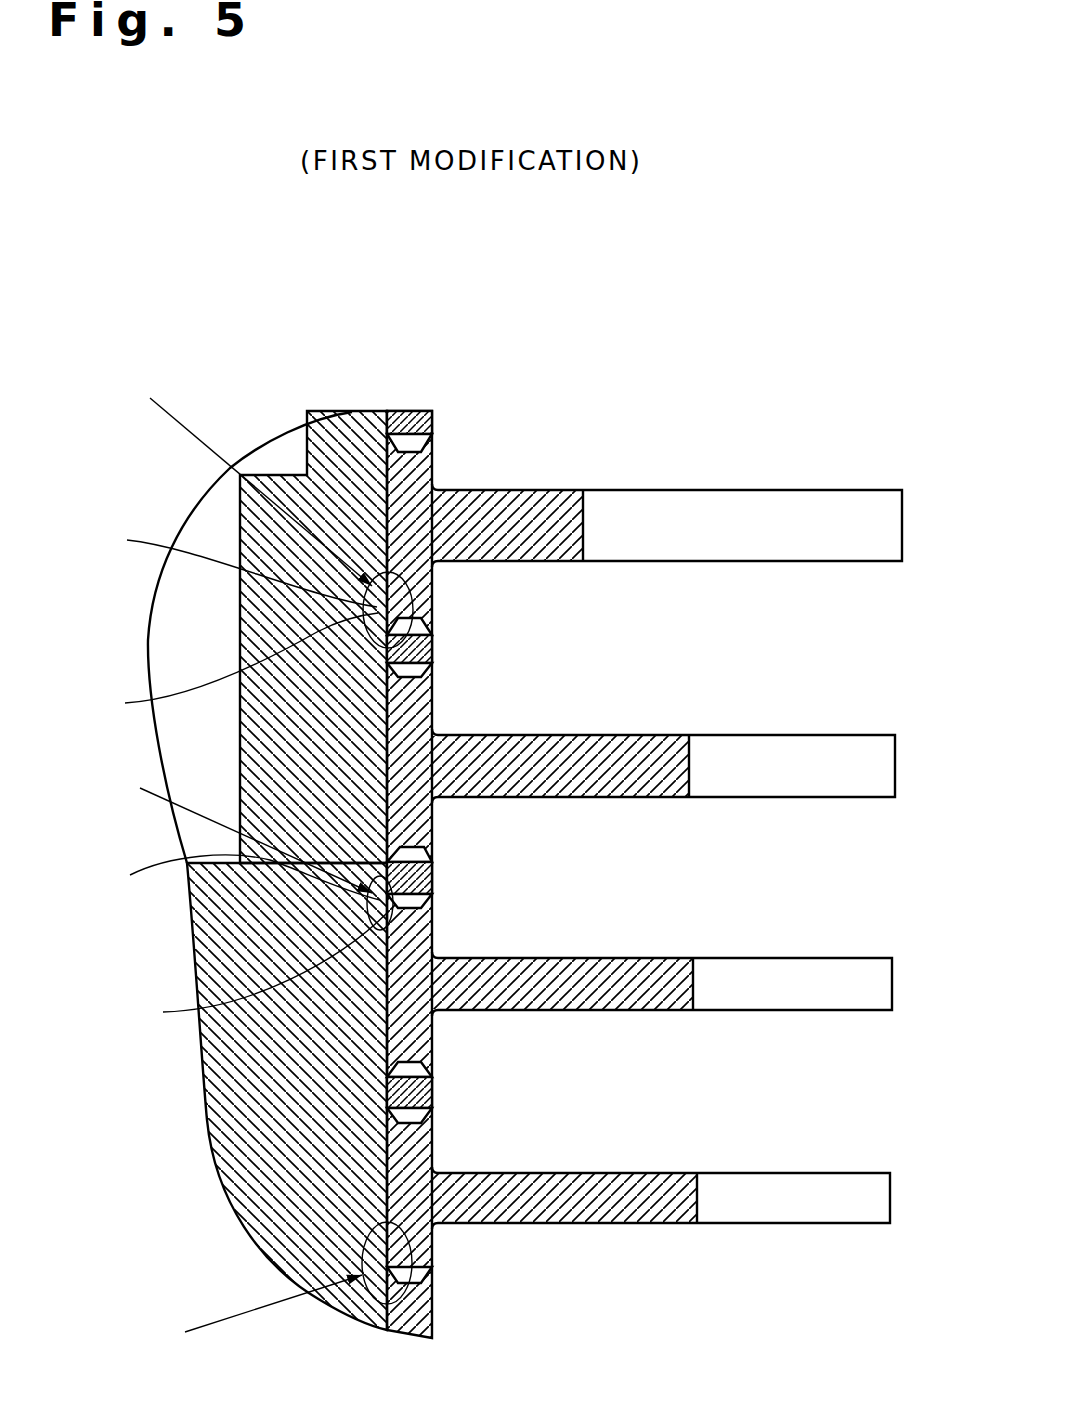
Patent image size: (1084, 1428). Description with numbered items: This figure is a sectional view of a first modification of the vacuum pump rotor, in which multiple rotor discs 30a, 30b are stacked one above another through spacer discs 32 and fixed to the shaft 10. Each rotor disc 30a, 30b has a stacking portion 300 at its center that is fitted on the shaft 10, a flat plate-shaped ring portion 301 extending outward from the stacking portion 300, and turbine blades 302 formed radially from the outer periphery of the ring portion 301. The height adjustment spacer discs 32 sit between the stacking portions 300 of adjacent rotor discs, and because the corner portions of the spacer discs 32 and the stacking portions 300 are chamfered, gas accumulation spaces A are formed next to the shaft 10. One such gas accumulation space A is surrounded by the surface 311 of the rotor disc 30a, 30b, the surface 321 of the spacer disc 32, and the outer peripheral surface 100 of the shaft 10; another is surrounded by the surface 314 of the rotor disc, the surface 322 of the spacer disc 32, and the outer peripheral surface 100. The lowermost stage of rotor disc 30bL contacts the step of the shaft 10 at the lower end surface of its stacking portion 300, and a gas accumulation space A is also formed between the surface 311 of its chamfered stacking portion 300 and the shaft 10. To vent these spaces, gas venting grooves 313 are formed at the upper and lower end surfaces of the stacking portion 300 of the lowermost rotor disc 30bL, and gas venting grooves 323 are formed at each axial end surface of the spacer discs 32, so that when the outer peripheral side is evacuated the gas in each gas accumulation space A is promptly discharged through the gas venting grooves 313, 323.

The shaft 10 is at (245, 1078).
The spacer disc 32 is at (413, 411).
The outer peripheral surface 100 is at (433, 597).
The stacking portion 300 is at (433, 470).
The ring portion 301 is at (562, 500).
The turbine blades 302 is at (767, 527).
The rotor disc 30a is at (882, 487).
The rotor disc 30b is at (870, 730).
The lowermost stage of rotor disc 30bL is at (870, 1170).
The surface 311 is at (222, 564).
The gas venting grooves 313 is at (423, 1283).
The surface 314 is at (246, 976).
The surface 321 is at (223, 671).
The surface 322 is at (227, 880).
The gas venting grooves 323 is at (425, 620).
The gas accumulation space A is at (241, 863).